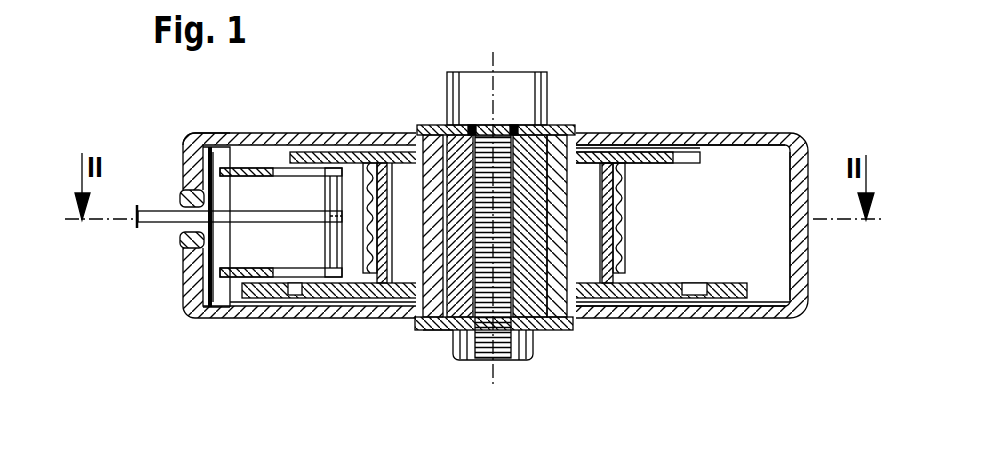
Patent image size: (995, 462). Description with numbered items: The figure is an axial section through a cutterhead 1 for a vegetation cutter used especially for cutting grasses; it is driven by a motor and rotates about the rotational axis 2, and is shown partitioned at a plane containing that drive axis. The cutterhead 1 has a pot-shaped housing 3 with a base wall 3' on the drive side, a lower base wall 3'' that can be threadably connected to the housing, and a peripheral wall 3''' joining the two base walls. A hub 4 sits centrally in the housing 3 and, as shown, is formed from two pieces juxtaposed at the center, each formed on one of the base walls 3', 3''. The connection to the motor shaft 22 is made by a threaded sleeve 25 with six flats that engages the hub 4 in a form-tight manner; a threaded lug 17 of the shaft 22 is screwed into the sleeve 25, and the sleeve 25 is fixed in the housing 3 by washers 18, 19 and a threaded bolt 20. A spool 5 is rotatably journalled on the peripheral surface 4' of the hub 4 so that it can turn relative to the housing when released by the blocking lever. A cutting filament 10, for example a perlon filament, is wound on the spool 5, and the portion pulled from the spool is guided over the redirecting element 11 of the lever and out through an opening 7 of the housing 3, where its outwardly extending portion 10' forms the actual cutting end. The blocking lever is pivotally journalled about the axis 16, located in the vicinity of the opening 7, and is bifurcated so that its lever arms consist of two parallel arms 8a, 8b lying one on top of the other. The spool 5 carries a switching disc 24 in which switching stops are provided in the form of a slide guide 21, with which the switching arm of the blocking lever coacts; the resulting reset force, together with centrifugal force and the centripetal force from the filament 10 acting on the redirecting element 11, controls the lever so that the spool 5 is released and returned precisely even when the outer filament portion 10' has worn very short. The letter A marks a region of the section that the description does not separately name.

The cutterhead 1 is at (228, 133).
The rotational axis 2 is at (500, 66).
The pot-shaped housing 3 is at (495, 191).
The base wall 3' is at (680, 105).
The lower base wall 3'' is at (680, 346).
The peripheral wall 3''' is at (816, 195).
The hub 4 is at (537, 191).
The peripheral surface of the hub 4' is at (409, 191).
The spool 5 is at (383, 284).
The opening 7 is at (180, 239).
The parallel arm of blocking lever 8a is at (258, 168).
The parallel arm of blocking lever 8b is at (262, 277).
The cutting filament 10 is at (527, 218).
The outwardly extending portion of the cutting filament 10' is at (167, 169).
The redirecting element 11 is at (341, 152).
The pivot axis 16 is at (218, 300).
The threaded lug 17 is at (470, 124).
The washer 18 is at (432, 126).
The washer 19 is at (562, 332).
The threaded bolt 20 is at (500, 352).
The slide guide 21 is at (296, 292).
The motor shaft 22 is at (530, 104).
The switching disc 24 is at (340, 298).
The threaded sleeve 25 is at (450, 325).
The chamber A is at (325, 222).